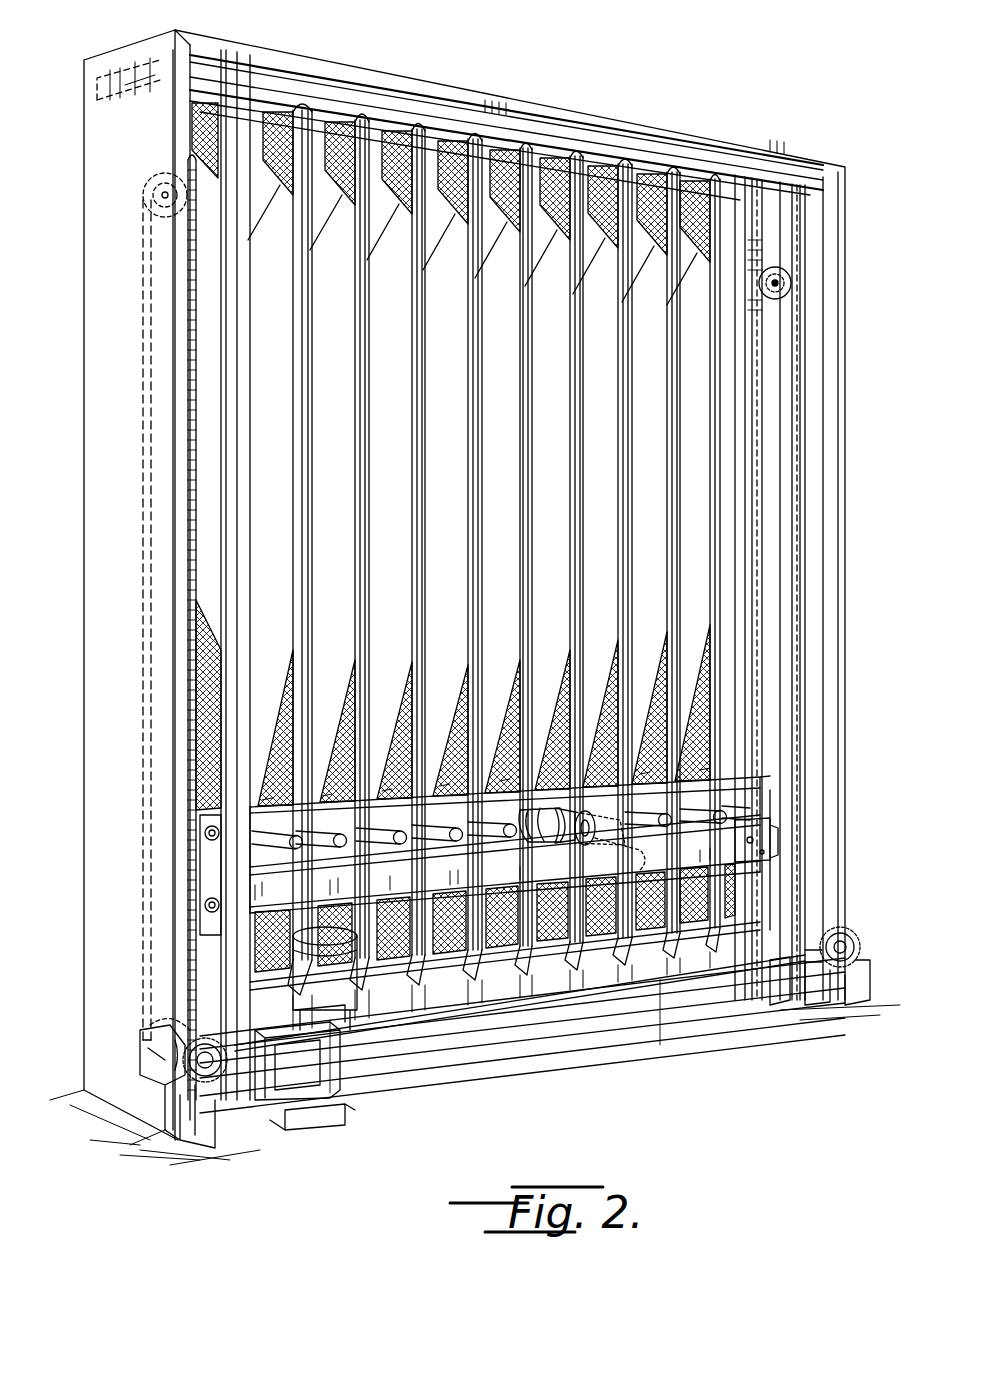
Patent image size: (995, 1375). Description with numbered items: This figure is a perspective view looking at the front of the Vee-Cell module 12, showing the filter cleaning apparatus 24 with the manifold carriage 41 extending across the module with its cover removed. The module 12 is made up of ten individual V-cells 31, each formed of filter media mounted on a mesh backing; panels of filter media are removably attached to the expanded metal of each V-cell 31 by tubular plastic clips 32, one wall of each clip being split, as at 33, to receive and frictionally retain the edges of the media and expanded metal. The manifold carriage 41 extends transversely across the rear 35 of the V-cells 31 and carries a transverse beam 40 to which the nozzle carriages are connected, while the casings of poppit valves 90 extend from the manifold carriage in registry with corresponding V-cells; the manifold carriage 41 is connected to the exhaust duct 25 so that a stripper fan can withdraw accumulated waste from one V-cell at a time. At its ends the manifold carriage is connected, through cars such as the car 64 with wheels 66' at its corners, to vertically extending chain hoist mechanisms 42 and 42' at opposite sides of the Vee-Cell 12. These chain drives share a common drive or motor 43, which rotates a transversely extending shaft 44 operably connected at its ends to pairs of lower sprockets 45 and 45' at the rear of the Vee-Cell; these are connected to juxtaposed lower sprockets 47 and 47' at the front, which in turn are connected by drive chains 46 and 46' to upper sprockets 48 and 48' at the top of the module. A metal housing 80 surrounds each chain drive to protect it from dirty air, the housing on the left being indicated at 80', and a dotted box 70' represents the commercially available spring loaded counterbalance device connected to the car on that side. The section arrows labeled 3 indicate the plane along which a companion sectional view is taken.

The Vee-Cell module 12 is at (112, 336).
The counterbalance device 70' is at (98, 50).
The drive chain 46' is at (114, 590).
The chain hoist mechanism 42' is at (92, 620).
The left side panel 80' is at (92, 746).
The upper sprocket 48' is at (110, 206).
The metal housing 80 is at (534, 575).
The chain hoist mechanism 42 is at (837, 591).
The drive chain 46 is at (814, 587).
The upper sprocket 48 is at (818, 254).
The transverse beam 40 is at (430, 885).
The V-cells 31 is at (332, 150).
The tubular plastic clips 32 is at (440, 168).
The split wall 33 is at (515, 170).
The manifold carriage 41 is at (340, 755).
The filter cleaning apparatus 24 is at (700, 780).
The wheels 66' is at (156, 862).
The car 64 is at (205, 892).
The section line FIG. 3 is at (210, 853).
The poppit valves 90 is at (440, 815).
The exhaust duct 25 is at (545, 840).
The lower sprocket 47 is at (563, 953).
The lower sprocket 47' is at (111, 1006).
The drive 43 is at (350, 1000).
The shaft 44 is at (485, 1010).
The lower sprocket 45' is at (195, 1112).
The lower sprocket 45 is at (835, 999).
The rear 35 is at (705, 975).